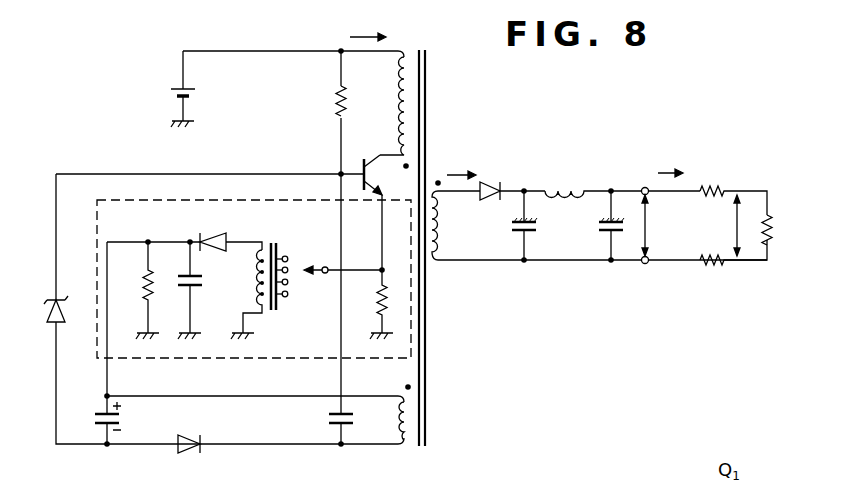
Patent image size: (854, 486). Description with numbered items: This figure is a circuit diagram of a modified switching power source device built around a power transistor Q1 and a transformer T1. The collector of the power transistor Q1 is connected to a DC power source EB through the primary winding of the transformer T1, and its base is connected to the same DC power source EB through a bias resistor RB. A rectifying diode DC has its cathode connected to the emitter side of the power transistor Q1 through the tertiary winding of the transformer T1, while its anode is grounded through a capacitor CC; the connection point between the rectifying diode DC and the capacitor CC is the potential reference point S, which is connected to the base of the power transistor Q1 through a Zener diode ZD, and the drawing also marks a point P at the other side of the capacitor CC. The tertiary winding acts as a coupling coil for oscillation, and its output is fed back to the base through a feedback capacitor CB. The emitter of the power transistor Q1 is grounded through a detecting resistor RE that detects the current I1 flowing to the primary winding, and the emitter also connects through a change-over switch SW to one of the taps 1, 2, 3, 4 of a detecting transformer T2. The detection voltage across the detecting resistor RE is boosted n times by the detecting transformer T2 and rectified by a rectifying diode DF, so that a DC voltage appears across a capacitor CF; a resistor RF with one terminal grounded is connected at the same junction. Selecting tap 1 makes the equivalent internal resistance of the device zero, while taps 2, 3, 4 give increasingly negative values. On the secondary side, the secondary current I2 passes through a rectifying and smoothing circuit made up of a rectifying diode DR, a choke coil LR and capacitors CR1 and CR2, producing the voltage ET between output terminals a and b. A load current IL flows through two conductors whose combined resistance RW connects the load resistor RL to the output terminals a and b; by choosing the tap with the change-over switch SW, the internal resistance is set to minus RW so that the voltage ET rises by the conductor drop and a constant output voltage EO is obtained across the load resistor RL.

The DC power source EB is at (196, 89).
The bias resistor RB is at (323, 101).
The current I1 is at (368, 24).
The transformer T1 is at (422, 50).
The power transistor Q1 is at (368, 201).
The detecting resistor RE is at (370, 303).
The rectifying diode DF is at (213, 257).
The resistor RF is at (137, 290).
The capacitor CF is at (182, 290).
The detecting transformer T2 is at (265, 275).
The tap 1 is at (288, 259).
The tap 2 is at (288, 271).
The tap 3 is at (288, 283).
The tap 4 is at (288, 295).
The change-over switch SW is at (334, 294).
The Zener diode ZD is at (63, 324).
The node P is at (107, 396).
The capacitor CC is at (123, 420).
The potential reference point S is at (105, 463).
The rectifying diode DC is at (190, 460).
The feedback capacitor CB is at (326, 423).
The secondary current I2 is at (461, 161).
The rectifying diode DR is at (512, 173).
The capacitor CR1 is at (507, 225).
The choke coil LR is at (578, 174).
The capacitor CR2 is at (595, 225).
The output terminal a is at (645, 187).
The output terminal b is at (645, 264).
The voltage between the output terminals ET is at (654, 225).
The load current IL is at (670, 162).
The combined resistance RW is at (728, 169).
The output voltage EO is at (734, 225).
The load resistor RL is at (778, 230).